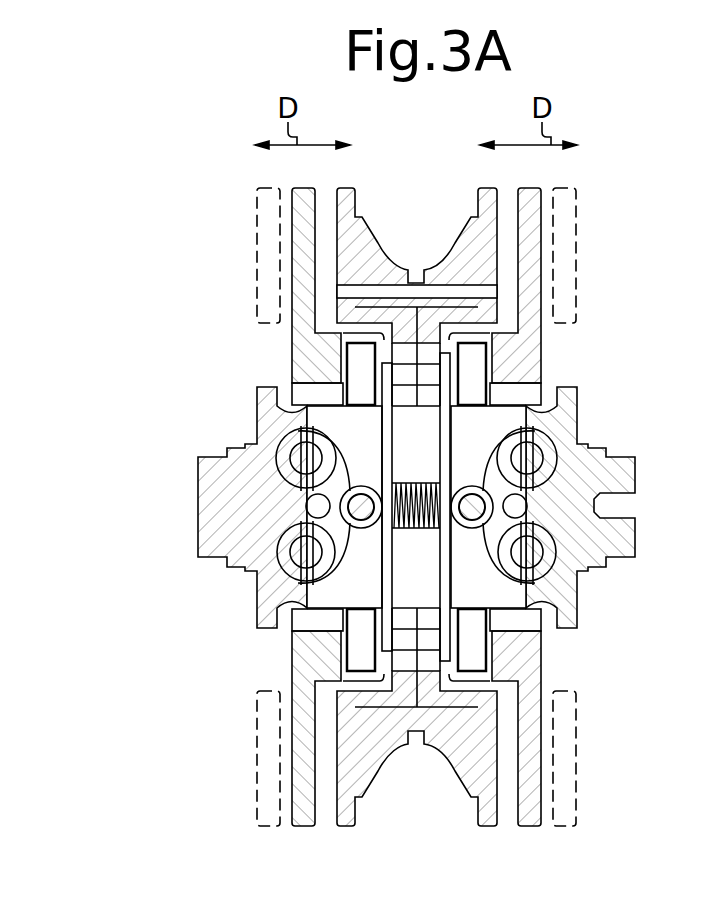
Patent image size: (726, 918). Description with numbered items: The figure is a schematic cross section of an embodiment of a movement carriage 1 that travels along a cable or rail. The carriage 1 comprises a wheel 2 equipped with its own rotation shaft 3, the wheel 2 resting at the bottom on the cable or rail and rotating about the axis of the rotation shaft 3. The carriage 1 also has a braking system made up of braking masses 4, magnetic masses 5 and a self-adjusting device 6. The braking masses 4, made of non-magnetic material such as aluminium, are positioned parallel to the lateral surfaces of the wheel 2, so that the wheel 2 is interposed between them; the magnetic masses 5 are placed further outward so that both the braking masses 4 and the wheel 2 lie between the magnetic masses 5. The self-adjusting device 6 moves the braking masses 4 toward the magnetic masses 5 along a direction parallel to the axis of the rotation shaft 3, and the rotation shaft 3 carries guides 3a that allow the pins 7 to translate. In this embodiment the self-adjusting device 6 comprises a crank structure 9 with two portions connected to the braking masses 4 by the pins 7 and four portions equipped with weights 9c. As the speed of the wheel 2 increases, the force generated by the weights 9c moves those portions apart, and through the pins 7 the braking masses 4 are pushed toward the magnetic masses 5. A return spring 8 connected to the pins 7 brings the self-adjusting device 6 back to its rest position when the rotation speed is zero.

The movement carriage 1 is at (641, 292).
The wheel 2 is at (458, 257).
The rotation shaft 3 is at (620, 480).
The guides 3a is at (318, 505).
The braking masses 4 is at (300, 269).
The magnetic masses 5 is at (265, 232).
The self-adjusting device 6 is at (280, 484).
The pins 7 is at (352, 509).
The return spring 8 is at (422, 513).
The crank structure 9 is at (512, 480).
The weights 9c is at (545, 446).